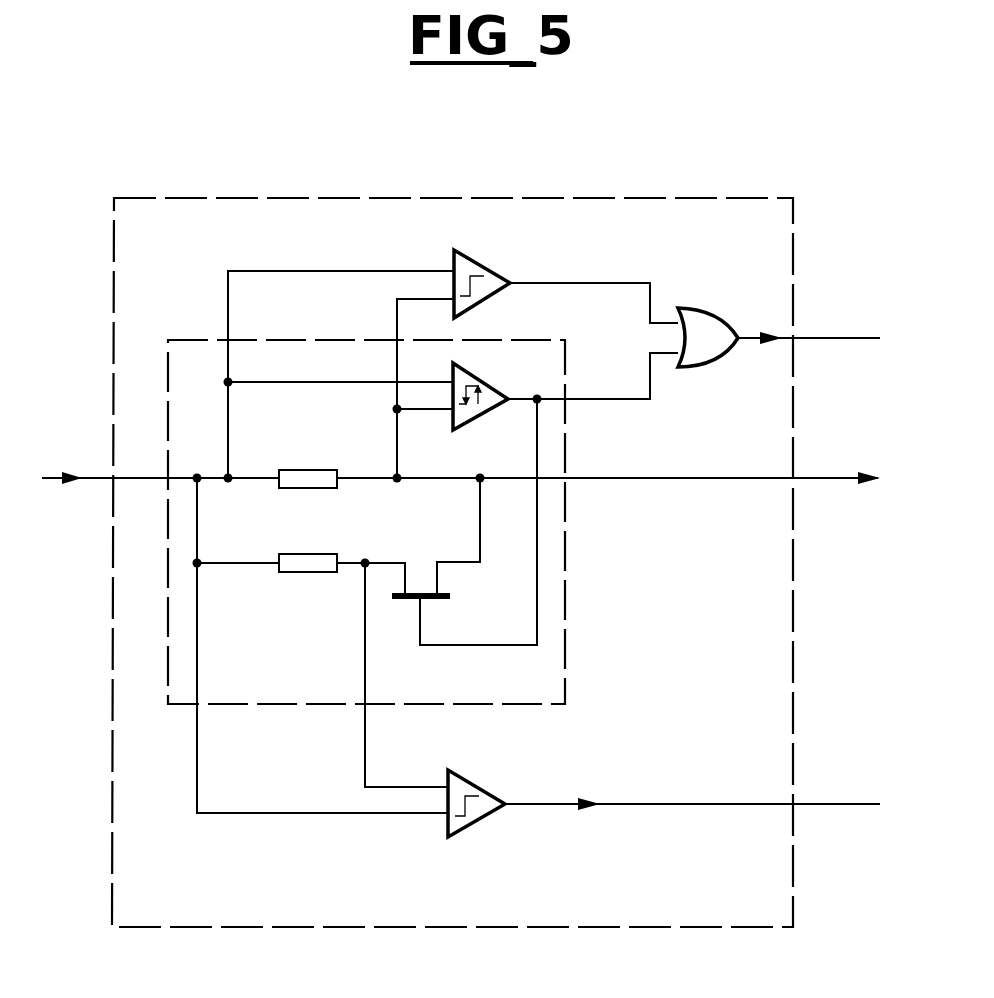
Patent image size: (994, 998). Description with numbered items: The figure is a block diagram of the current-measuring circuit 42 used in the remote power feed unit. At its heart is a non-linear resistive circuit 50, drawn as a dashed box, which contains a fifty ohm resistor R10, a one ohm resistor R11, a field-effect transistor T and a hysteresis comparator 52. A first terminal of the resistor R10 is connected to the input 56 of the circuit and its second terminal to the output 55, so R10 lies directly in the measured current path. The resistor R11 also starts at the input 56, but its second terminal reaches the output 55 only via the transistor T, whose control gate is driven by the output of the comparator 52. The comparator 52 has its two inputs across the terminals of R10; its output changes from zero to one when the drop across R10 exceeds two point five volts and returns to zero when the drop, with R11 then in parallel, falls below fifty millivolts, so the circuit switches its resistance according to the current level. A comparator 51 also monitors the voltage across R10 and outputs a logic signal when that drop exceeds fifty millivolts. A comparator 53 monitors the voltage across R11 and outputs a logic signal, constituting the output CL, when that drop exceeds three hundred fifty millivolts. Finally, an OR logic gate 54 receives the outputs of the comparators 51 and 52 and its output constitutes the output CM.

The current-measuring circuit 42 is at (703, 198).
The non-linear resistive circuit 50 is at (567, 430).
The comparator 51 is at (490, 262).
The hysteresis comparator 52 is at (487, 380).
The comparator 53 is at (480, 785).
The OR logic gate 54 is at (715, 306).
The output 55 is at (824, 478).
The input 56 is at (92, 476).
The resistor R10 is at (308, 466).
The resistor R11 is at (308, 551).
The field-effect transistor T is at (452, 596).